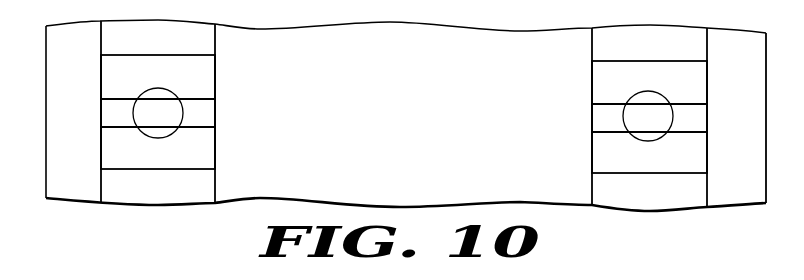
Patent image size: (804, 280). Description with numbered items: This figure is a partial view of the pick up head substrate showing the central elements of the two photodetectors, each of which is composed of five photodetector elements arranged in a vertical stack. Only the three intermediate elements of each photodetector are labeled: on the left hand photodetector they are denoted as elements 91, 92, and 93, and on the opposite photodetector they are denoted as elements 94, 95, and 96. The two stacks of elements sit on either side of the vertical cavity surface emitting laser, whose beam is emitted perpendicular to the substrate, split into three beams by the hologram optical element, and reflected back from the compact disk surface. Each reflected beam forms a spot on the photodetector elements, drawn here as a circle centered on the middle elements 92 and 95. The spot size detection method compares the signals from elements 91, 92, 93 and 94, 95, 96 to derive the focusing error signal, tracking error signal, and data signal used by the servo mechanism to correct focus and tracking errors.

The intermediate photodetector element 91 is at (214, 75).
The intermediate photodetector element 92 is at (214, 110).
The intermediate photodetector element 93 is at (214, 145).
The intermediate photodetector element 94 is at (592, 81).
The intermediate photodetector element 95 is at (592, 115).
The intermediate photodetector element 96 is at (592, 150).